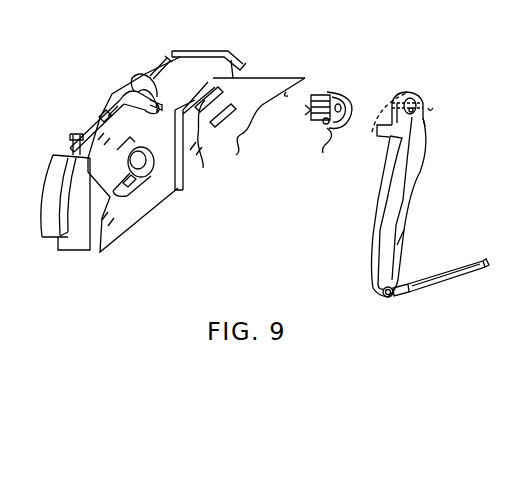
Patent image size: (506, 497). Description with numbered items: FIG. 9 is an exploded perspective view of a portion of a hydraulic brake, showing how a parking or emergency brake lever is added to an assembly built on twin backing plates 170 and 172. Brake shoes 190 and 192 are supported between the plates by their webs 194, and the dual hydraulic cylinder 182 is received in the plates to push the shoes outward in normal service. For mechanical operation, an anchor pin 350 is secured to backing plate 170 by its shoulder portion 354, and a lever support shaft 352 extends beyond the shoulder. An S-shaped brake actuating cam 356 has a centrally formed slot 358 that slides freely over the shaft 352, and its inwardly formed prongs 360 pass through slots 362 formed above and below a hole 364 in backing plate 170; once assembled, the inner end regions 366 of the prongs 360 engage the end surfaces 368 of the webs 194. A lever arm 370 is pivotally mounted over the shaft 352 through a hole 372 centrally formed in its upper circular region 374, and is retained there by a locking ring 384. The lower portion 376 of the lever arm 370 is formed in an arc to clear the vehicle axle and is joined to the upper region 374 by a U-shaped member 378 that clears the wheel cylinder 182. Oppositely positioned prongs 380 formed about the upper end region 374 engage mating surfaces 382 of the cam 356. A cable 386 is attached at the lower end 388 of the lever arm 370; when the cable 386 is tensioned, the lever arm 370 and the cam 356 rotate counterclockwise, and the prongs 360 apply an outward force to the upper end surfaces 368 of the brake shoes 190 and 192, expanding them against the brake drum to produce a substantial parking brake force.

The backing plate 170 is at (180, 190).
The backing plate 172 is at (131, 78).
The dual hydraulic cylinder 182 is at (157, 206).
The brake shoe 190 is at (63, 232).
The brake shoe 192 is at (224, 51).
The web 194 is at (77, 142).
The anchor pin 350 is at (128, 89).
The lever support shaft 352 is at (153, 70).
The shoulder portion 354 is at (111, 100).
The S-shaped brake actuating cam 356 is at (336, 93).
The centrally formed slot 358 is at (323, 127).
The prongs 360 is at (318, 93).
The slots 362 is at (203, 147).
The hole 364 is at (223, 93).
The inner end regions 366 is at (308, 110).
The end surfaces 368 is at (102, 117).
The lever arm 370 is at (383, 215).
The hole 372 is at (422, 122).
The upper circular region 374 is at (433, 89).
The lower portion 376 is at (406, 226).
The U-shaped member 378 is at (420, 150).
The prongs 380 is at (377, 126).
The mating surfaces 382 is at (326, 145).
The locking ring 384 is at (437, 110).
The cable 386 is at (417, 283).
The lower end 388 is at (385, 298).